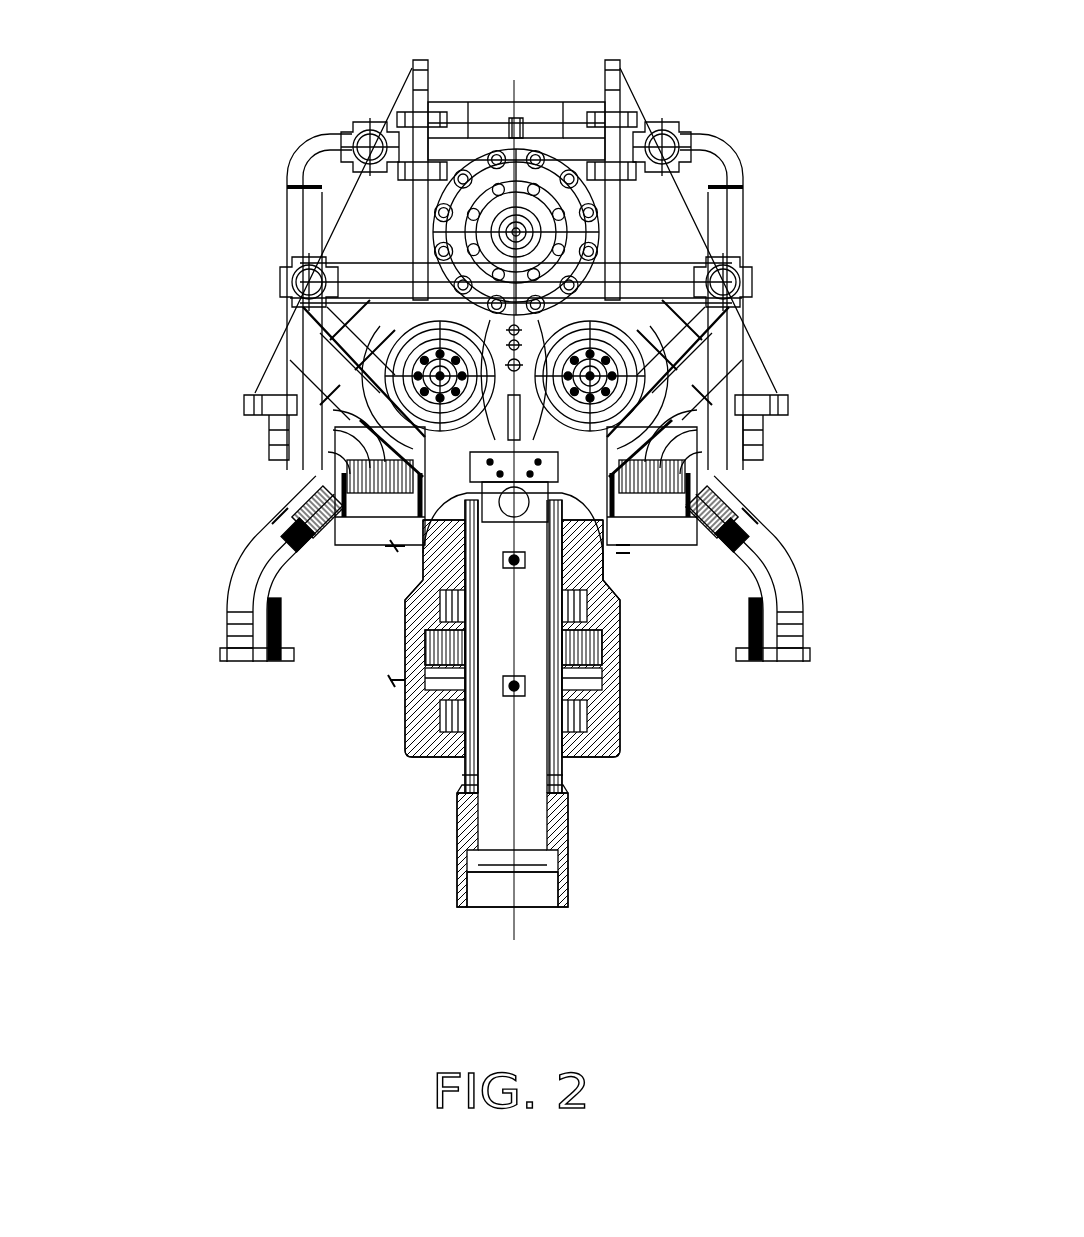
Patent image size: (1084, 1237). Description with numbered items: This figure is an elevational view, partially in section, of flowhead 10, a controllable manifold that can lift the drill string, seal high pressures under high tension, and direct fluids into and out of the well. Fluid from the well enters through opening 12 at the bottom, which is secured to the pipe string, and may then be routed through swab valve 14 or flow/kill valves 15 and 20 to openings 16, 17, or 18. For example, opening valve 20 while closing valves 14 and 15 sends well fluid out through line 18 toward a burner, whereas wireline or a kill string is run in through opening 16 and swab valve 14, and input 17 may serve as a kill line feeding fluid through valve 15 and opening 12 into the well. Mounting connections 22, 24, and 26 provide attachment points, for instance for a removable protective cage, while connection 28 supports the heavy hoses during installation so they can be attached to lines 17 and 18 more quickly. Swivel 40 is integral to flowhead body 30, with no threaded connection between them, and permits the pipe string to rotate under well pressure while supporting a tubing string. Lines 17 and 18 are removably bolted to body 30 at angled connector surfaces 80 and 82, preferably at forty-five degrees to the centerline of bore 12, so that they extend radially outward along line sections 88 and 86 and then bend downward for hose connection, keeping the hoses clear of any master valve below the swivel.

The flowhead 10 is at (850, 150).
The opening 12 is at (535, 822).
The swab valve 14 is at (565, 150).
The flow/kill valve 15 is at (430, 338).
The opening 16 is at (533, 108).
The input line 17 is at (250, 550).
The flow line 18 is at (785, 582).
The flow/kill valve 20 is at (600, 318).
The connection 22 is at (677, 130).
The connection 24 is at (745, 275).
The connection 26 is at (753, 425).
The connection 28 is at (268, 418).
The flowhead body 30 is at (385, 520).
The swivel 40 is at (620, 680).
The angled connector surface 80 is at (280, 458).
The angled connector surface 82 is at (730, 473).
The line section 86 is at (700, 535).
The line section 88 is at (308, 545).